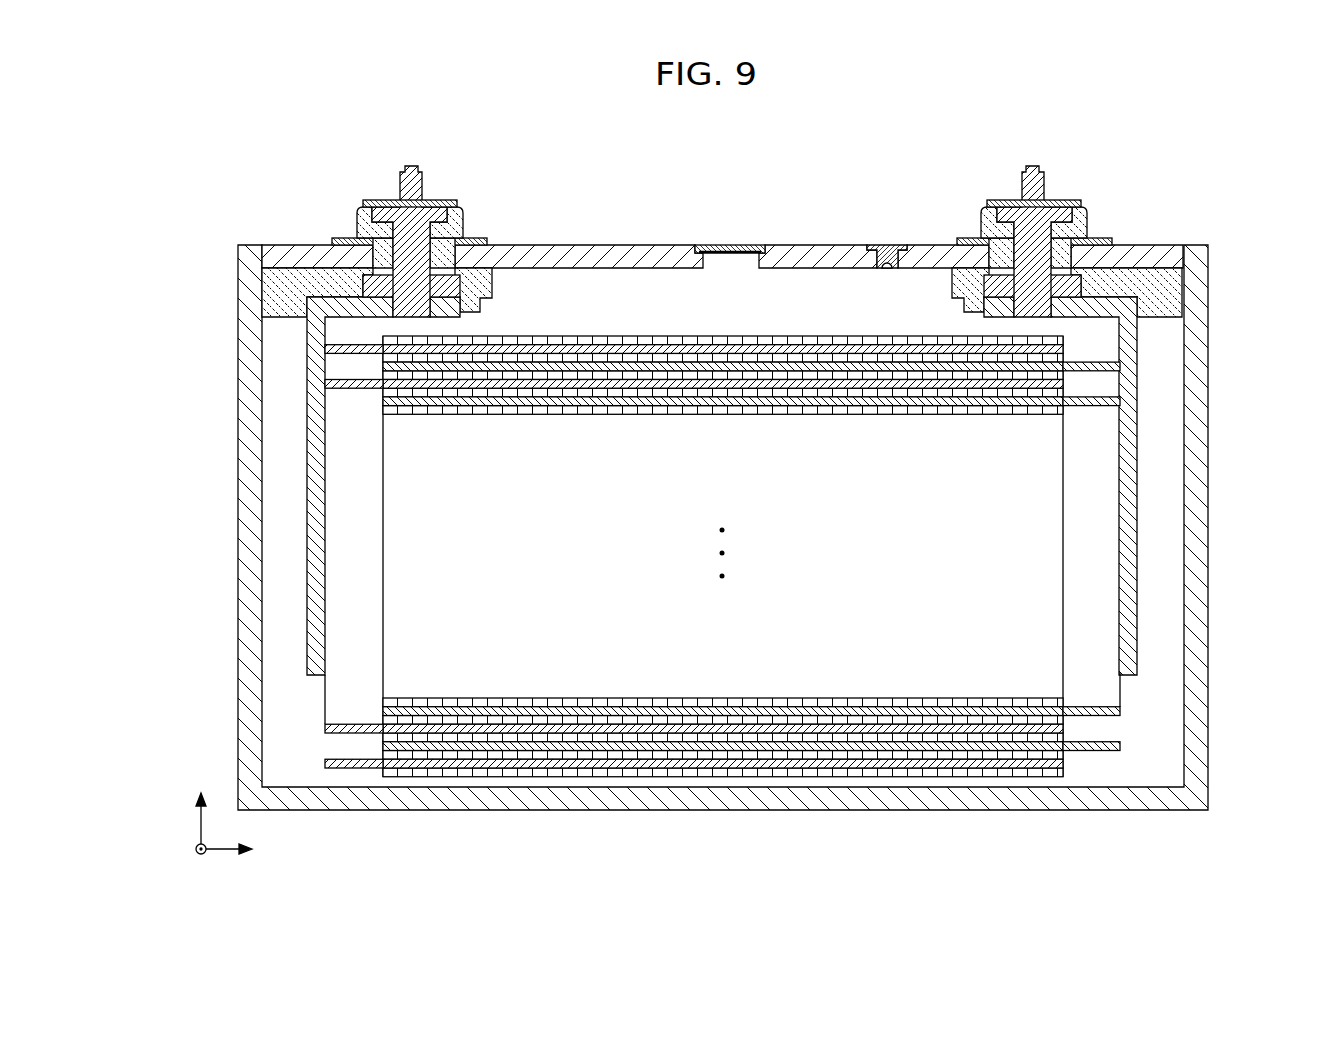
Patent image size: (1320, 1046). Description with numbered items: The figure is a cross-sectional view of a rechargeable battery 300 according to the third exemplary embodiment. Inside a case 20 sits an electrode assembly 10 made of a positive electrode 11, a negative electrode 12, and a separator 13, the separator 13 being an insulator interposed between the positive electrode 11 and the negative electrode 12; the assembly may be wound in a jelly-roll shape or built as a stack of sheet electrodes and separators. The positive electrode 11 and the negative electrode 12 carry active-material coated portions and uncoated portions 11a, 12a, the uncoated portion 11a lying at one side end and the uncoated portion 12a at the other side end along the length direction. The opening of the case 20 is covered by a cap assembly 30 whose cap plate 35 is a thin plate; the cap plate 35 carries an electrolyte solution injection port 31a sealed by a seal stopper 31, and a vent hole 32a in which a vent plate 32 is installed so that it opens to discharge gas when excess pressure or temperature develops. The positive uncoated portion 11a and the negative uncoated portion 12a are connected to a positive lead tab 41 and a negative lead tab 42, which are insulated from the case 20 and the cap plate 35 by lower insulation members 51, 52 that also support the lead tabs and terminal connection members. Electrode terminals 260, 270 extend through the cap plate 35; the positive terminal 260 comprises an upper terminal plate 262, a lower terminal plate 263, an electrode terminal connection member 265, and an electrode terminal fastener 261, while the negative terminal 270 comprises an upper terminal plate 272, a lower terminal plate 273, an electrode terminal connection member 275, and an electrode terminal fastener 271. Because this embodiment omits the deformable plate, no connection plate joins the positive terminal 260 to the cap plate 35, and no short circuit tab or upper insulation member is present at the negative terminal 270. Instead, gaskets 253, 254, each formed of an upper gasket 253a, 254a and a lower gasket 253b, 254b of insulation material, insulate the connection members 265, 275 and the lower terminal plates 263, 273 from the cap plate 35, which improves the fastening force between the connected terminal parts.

The rechargeable battery 300 is at (819, 122).
The electrode assembly 10 is at (723, 600).
The positive electrode 11 is at (627, 744).
The uncoated portion of the positive electrode 11a is at (1097, 748).
The negative electrode 12 is at (505, 767).
The uncoated portion of the negative electrode 12a is at (352, 768).
The separator 13 is at (812, 770).
The case 20 is at (237, 672).
The cap assembly 30 is at (769, 237).
The seal stopper 31 is at (887, 246).
The electrolyte solution injection port 31a is at (886, 270).
The vent plate 32 is at (745, 247).
The vent hole 32a is at (750, 270).
The cap plate 35 is at (1165, 250).
The positive lead tab 41 is at (1132, 570).
The negative lead tab 42 is at (318, 512).
The lower insulation member 51 is at (1177, 292).
The lower insulation member 52 is at (278, 294).
The gasket 253 is at (1002, 187).
The upper gasket 253a is at (1003, 255).
The lower gasket 253b is at (960, 241).
The gasket 254 is at (377, 189).
The upper gasket 254a is at (373, 260).
The lower gasket 254b is at (333, 240).
The positive terminal 260 is at (1088, 192).
The electrode terminal fastener 261 is at (1034, 166).
The upper terminal plate 262 is at (1057, 200).
The lower terminal plate 263 is at (1078, 212).
The electrode terminal connection member 265 is at (1077, 268).
The negative terminal 270 is at (352, 207).
The electrode terminal fastener 271 is at (410, 166).
The upper terminal plate 272 is at (429, 200).
The lower terminal plate 273 is at (462, 222).
The electrode terminal connection member 275 is at (447, 288).